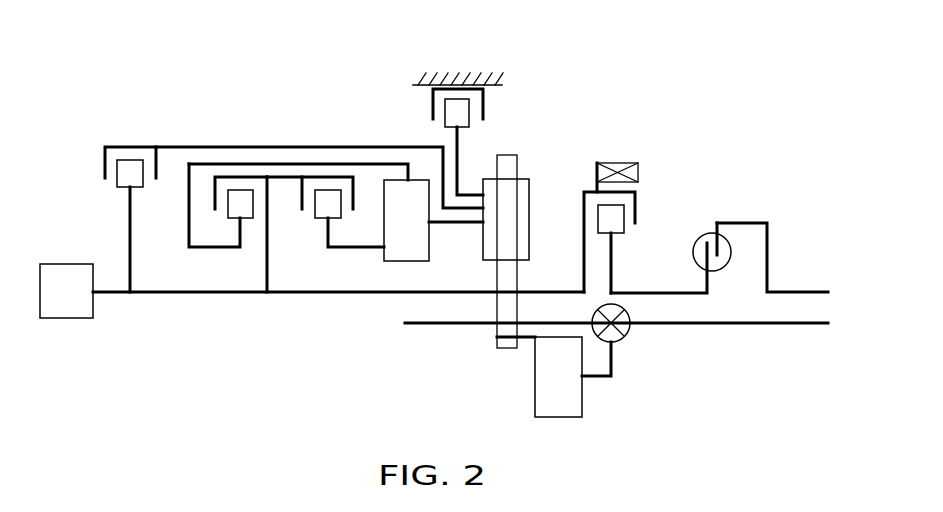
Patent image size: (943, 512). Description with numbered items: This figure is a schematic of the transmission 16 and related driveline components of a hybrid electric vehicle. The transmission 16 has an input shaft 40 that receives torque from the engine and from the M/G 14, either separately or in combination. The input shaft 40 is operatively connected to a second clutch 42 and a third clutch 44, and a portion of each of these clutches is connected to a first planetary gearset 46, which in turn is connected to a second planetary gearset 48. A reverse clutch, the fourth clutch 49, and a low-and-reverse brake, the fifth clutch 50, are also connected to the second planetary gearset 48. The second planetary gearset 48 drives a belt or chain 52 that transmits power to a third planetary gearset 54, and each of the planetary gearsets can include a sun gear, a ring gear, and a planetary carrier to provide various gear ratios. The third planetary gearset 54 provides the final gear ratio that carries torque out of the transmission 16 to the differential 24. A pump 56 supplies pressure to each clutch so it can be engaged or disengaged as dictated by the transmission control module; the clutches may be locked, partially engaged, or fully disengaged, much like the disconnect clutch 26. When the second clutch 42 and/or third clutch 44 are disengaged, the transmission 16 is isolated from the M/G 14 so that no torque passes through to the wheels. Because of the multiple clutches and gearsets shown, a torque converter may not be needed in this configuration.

The M/G 14 is at (614, 162).
The transmission 16 is at (204, 351).
The differential 24 is at (619, 340).
The disconnect clutch 26 is at (630, 234).
The input shaft 40 is at (317, 293).
The second clutch 42 is at (214, 193).
The third clutch 44 is at (299, 198).
The first planetary gearset 46 is at (393, 262).
The second planetary gearset 48 is at (533, 230).
The fourth clutch 49 is at (105, 162).
The fifth clutch 50 is at (431, 111).
The belt or chain 52 is at (517, 163).
The third planetary gearset 54 is at (535, 384).
The pump 56 is at (63, 264).